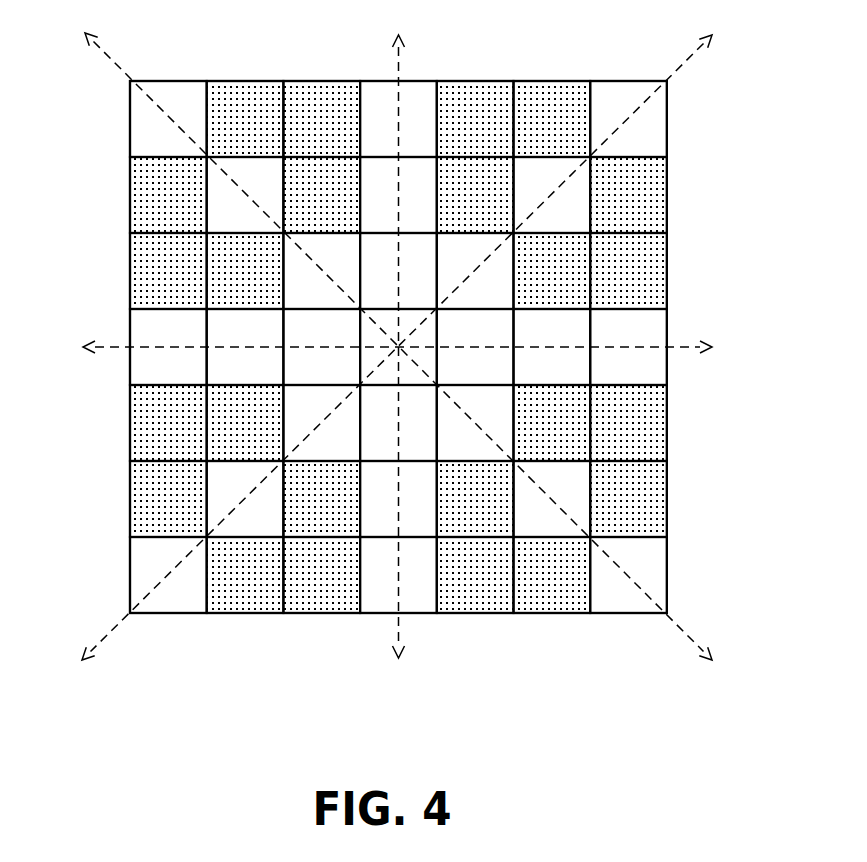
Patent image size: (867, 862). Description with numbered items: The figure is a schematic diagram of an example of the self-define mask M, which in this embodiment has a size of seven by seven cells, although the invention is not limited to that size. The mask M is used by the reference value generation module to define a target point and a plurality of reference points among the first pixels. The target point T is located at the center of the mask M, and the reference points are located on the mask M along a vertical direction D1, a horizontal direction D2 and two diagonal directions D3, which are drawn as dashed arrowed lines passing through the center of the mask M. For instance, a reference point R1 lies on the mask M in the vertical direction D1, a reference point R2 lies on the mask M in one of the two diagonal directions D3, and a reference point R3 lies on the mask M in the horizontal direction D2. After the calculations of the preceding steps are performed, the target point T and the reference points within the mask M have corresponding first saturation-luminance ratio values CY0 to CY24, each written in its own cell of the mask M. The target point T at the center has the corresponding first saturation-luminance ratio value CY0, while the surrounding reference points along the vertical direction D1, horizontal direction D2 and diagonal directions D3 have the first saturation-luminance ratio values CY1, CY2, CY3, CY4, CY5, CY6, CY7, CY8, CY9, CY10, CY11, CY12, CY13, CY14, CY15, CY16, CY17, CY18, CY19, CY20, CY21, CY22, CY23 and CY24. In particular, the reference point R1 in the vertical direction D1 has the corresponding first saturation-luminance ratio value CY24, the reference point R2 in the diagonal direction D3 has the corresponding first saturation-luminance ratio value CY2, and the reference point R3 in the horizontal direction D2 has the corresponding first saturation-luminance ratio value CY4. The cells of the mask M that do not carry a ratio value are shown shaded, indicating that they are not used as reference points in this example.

The self-define mask M is at (552, 80).
The target point T is at (398, 346).
The vertical direction D1 is at (403, 66).
The horizontal direction D2 is at (686, 343).
The diagonal directions D3 is at (688, 62).
The reference point R1 is at (417, 600).
The reference point R2 is at (255, 170).
The reference point R3 is at (140, 327).
The first saturation-luminance ratio value CY0 is at (398, 347).
The first saturation-luminance ratio value CY1 is at (168, 119).
The first saturation-luminance ratio value CY2 is at (245, 195).
The first saturation-luminance ratio value CY3 is at (321, 271).
The first saturation-luminance ratio value CY4 is at (168, 347).
The first saturation-luminance ratio value CY5 is at (245, 347).
The first saturation-luminance ratio value CY6 is at (321, 347).
The first saturation-luminance ratio value CY7 is at (168, 575).
The first saturation-luminance ratio value CY8 is at (245, 499).
The first saturation-luminance ratio value CY9 is at (321, 423).
The first saturation-luminance ratio value CY10 is at (475, 271).
The first saturation-luminance ratio value CY11 is at (552, 195).
The first saturation-luminance ratio value CY12 is at (628, 119).
The first saturation-luminance ratio value CY13 is at (475, 347).
The first saturation-luminance ratio value CY14 is at (552, 347).
The first saturation-luminance ratio value CY15 is at (628, 347).
The first saturation-luminance ratio value CY16 is at (475, 423).
The first saturation-luminance ratio value CY17 is at (552, 499).
The first saturation-luminance ratio value CY18 is at (628, 575).
The first saturation-luminance ratio value CY19 is at (398, 271).
The first saturation-luminance ratio value CY20 is at (398, 195).
The first saturation-luminance ratio value CY21 is at (398, 119).
The first saturation-luminance ratio value CY22 is at (398, 423).
The first saturation-luminance ratio value CY23 is at (398, 499).
The first saturation-luminance ratio value CY24 is at (398, 575).